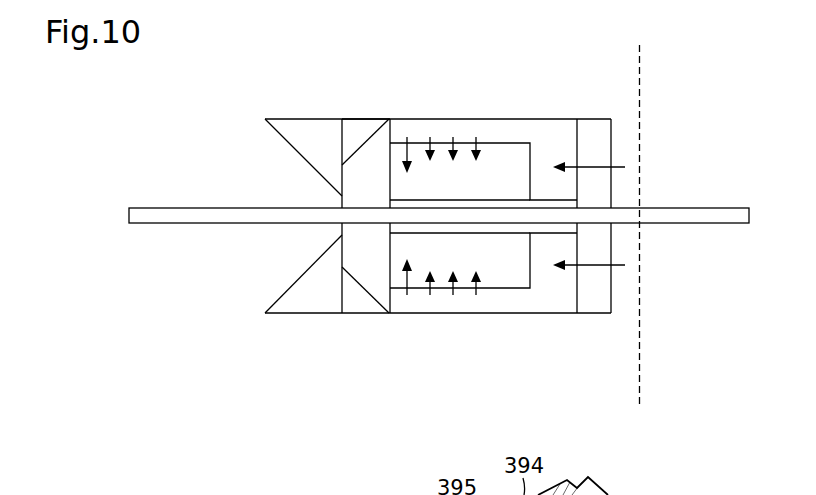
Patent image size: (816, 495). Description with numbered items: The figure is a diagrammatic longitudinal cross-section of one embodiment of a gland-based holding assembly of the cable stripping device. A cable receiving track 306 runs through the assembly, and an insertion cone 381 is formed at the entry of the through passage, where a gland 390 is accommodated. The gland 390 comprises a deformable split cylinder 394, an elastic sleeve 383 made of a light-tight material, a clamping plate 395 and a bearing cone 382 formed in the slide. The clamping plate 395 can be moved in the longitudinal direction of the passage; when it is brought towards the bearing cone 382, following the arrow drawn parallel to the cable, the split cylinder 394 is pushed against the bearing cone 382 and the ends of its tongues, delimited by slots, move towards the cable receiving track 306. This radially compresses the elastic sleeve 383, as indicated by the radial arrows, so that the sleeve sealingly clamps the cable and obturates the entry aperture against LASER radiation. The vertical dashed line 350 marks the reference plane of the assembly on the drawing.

The cable receiving track 306 is at (644, 198).
The axis / reference line 350 is at (640, 62).
The insertion cone 381 is at (305, 140).
The bearing cone 382 is at (363, 122).
The elastic sleeve 383 is at (463, 158).
The gland 390 is at (353, 107).
The deformable split cylinder 394 is at (523, 133).
The clamping plate 395 is at (598, 137).